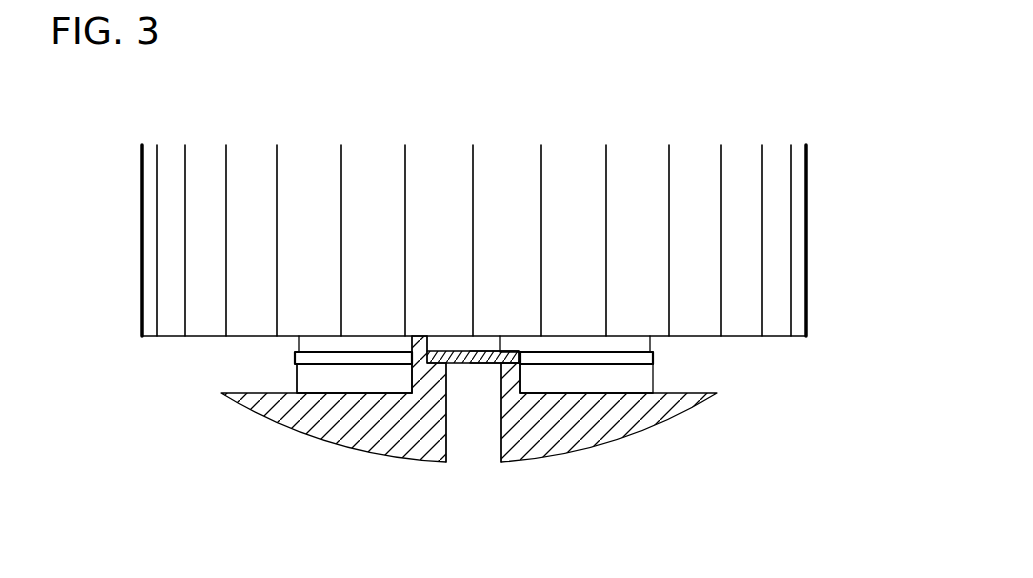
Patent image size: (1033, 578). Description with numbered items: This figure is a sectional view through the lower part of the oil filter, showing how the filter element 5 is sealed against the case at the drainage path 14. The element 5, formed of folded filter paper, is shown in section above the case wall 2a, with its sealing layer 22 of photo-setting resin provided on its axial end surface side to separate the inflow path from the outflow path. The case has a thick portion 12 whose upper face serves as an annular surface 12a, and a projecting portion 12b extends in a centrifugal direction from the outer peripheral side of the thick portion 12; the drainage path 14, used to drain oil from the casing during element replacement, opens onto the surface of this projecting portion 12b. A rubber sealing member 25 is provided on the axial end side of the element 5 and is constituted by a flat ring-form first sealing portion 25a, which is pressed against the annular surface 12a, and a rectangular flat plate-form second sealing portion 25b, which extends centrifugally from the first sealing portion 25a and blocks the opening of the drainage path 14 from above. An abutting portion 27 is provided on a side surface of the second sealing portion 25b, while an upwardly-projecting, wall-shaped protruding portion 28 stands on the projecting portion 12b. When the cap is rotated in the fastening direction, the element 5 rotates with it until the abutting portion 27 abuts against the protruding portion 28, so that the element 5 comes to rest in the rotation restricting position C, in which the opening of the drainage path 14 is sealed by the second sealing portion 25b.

The filter element 5 is at (808, 195).
The rotation restricting position C is at (808, 302).
The sealing layer 22 is at (639, 343).
The thick portion 12 is at (640, 377).
The annular surface 12a is at (596, 366).
The projecting portion 12b is at (527, 378).
The sealing member 25 is at (293, 357).
The first sealing portion 25a is at (340, 357).
The second sealing portion 25b is at (490, 357).
The abutting portion 27 is at (432, 356).
The protruding portion 28 is at (413, 343).
The housing wall 2a is at (376, 437).
The drainage path 14 is at (448, 440).